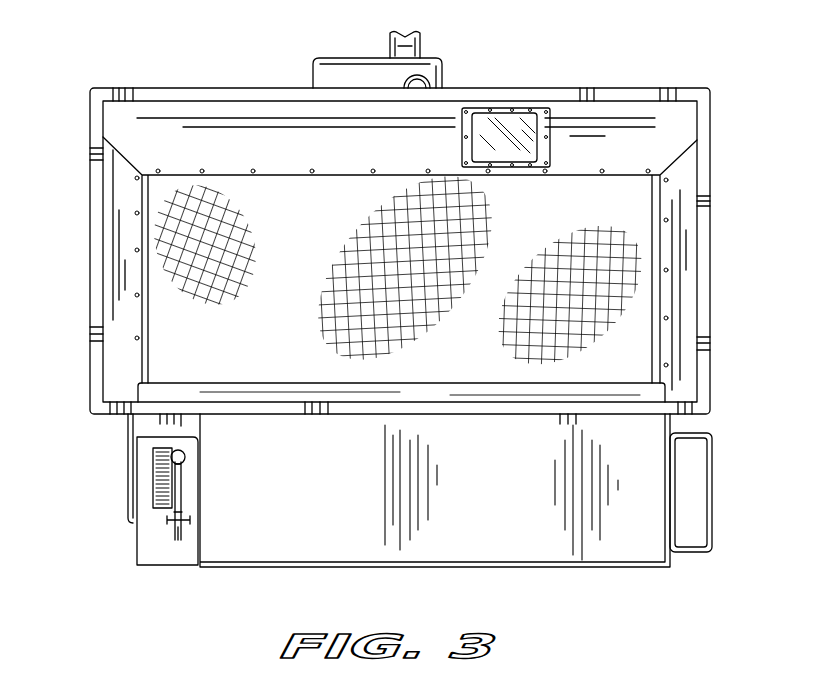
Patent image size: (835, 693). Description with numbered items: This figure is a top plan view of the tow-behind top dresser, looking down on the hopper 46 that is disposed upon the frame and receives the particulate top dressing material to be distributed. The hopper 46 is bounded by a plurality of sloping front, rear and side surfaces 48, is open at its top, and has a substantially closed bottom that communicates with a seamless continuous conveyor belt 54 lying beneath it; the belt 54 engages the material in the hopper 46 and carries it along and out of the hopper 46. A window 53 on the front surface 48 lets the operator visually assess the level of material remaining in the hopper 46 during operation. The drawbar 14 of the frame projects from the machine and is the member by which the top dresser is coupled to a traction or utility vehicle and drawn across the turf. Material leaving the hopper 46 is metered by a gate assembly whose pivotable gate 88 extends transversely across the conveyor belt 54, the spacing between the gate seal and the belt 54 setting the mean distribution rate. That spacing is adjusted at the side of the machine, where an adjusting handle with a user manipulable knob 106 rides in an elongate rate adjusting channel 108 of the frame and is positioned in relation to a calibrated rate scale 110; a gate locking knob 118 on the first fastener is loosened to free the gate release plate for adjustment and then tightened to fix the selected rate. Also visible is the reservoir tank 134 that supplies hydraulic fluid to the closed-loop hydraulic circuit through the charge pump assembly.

The drawbar 14 is at (422, 37).
The hopper 46 is at (708, 312).
The sloping front, rear and side surfaces 48 is at (663, 150).
The window 53 is at (515, 115).
The conveyor belt 54 is at (163, 197).
The pivotable gate 88 is at (172, 388).
The user manipulable knob 106 is at (190, 457).
The rate adjusting channel 108 is at (188, 483).
The rate scale 110 is at (160, 473).
The gate locking knob 118 is at (170, 521).
The reservoir tank 134 is at (315, 70).